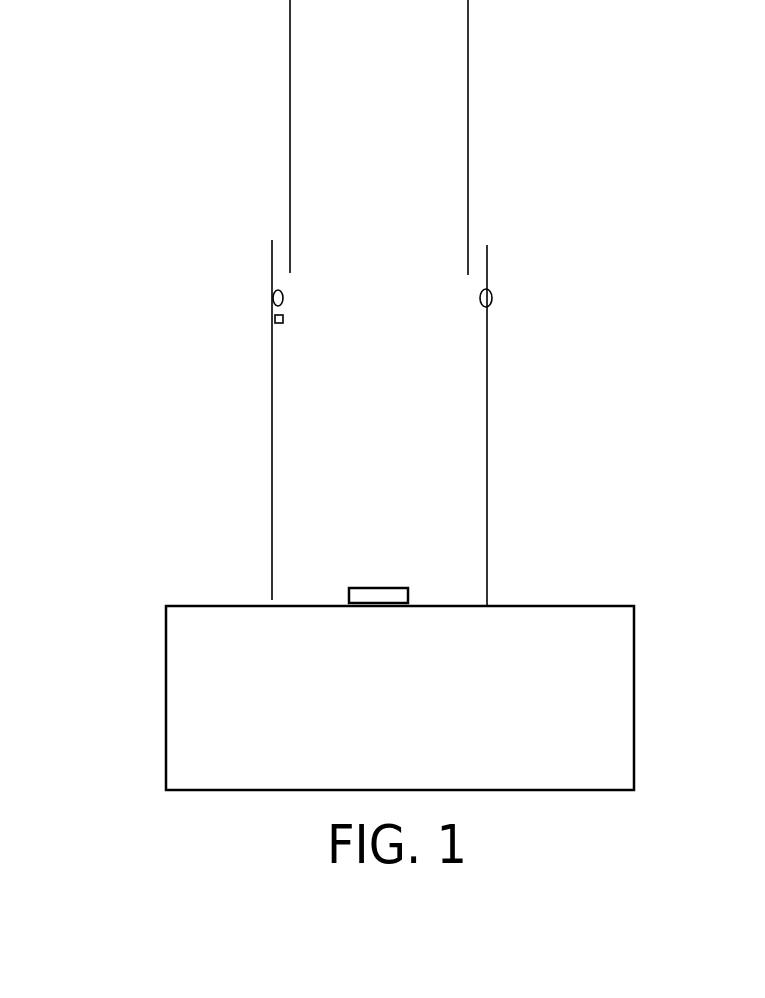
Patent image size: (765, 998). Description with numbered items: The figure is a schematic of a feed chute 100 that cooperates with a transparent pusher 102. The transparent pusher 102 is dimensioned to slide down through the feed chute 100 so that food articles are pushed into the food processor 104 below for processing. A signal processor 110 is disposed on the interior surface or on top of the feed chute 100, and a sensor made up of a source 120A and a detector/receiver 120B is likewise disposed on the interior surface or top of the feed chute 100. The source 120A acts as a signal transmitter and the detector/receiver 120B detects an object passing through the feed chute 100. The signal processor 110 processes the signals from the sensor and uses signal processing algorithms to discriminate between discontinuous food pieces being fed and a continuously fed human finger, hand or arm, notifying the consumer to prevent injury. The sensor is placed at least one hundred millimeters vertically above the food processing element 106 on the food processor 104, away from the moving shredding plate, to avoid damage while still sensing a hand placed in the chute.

The feed chute 100 is at (487, 411).
The transparent pusher 102 is at (468, 57).
The food processor 104 is at (166, 622).
The food processing element 106 is at (391, 588).
The signal processor 110 is at (274, 317).
The source 120A is at (273, 298).
The detector/receiver 120B is at (492, 297).